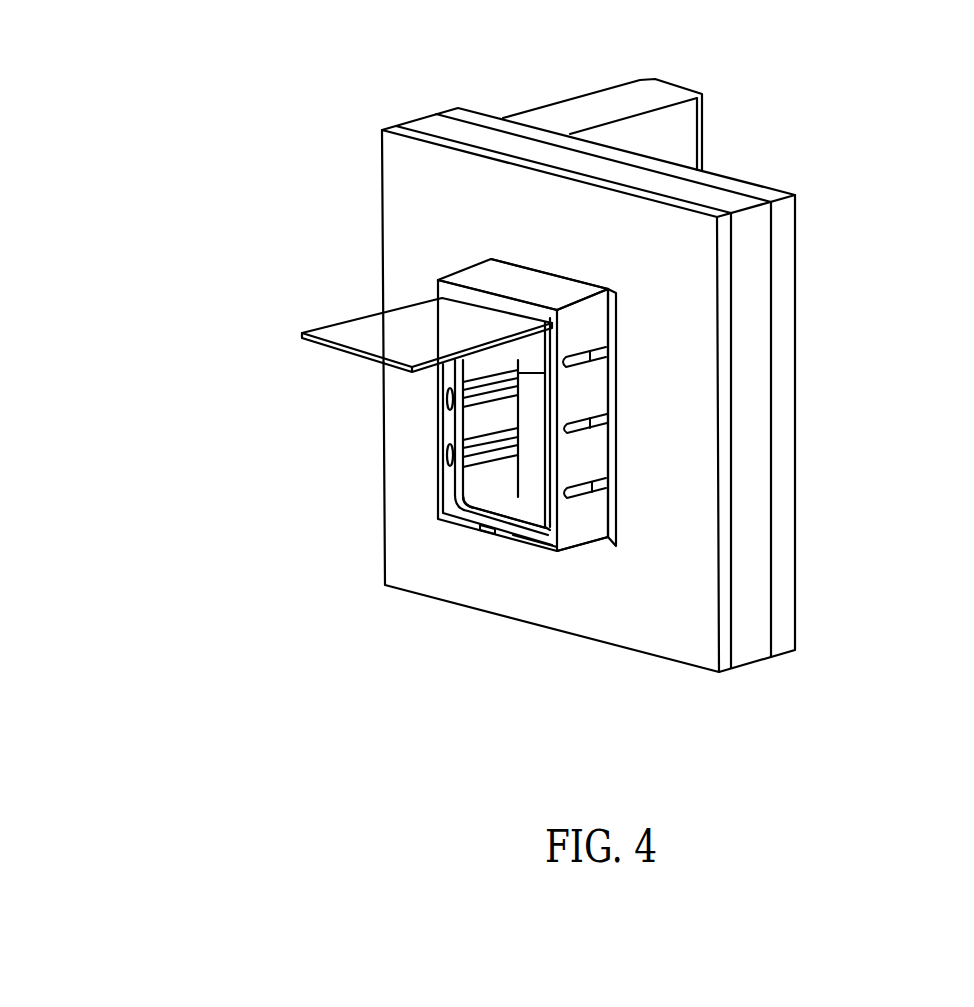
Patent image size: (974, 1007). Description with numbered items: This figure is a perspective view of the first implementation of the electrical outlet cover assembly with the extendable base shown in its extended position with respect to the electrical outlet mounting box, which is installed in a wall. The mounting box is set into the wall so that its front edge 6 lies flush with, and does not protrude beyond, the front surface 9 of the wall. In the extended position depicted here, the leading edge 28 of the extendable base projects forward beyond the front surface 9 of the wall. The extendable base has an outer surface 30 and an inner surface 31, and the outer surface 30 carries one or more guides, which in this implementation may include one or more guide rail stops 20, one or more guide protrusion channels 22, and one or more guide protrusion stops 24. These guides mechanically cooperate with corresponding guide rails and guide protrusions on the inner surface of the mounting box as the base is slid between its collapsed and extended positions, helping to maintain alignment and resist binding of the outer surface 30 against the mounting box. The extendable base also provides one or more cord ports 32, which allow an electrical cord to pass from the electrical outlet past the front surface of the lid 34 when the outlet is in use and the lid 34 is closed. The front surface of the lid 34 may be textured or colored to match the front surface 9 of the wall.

The front edge 6 is at (564, 278).
The front surface 9 is at (445, 203).
The guide rail stops 20 is at (590, 423).
The guide protrusion channels 22 is at (605, 352).
The guide protrusion stops 24 is at (567, 367).
The leading edge 28 is at (480, 297).
The outer surface 30 is at (583, 518).
The inner surface 31 is at (523, 505).
The cord ports 32 is at (505, 522).
The lid 34 is at (385, 336).